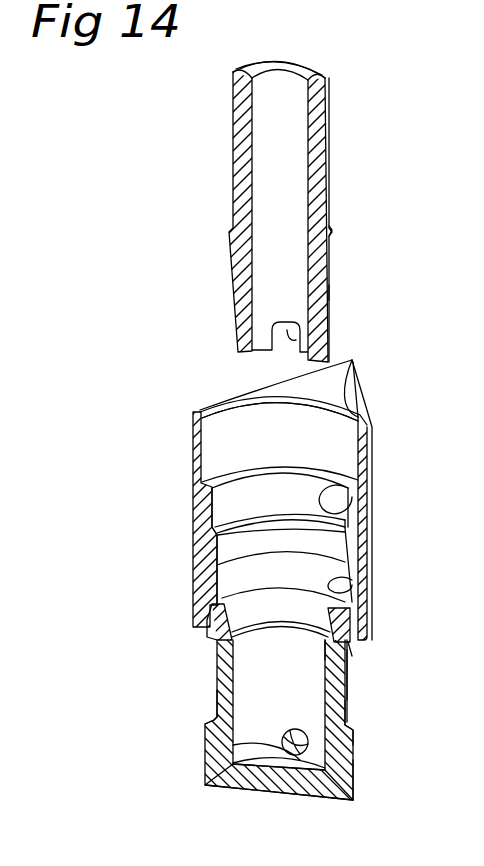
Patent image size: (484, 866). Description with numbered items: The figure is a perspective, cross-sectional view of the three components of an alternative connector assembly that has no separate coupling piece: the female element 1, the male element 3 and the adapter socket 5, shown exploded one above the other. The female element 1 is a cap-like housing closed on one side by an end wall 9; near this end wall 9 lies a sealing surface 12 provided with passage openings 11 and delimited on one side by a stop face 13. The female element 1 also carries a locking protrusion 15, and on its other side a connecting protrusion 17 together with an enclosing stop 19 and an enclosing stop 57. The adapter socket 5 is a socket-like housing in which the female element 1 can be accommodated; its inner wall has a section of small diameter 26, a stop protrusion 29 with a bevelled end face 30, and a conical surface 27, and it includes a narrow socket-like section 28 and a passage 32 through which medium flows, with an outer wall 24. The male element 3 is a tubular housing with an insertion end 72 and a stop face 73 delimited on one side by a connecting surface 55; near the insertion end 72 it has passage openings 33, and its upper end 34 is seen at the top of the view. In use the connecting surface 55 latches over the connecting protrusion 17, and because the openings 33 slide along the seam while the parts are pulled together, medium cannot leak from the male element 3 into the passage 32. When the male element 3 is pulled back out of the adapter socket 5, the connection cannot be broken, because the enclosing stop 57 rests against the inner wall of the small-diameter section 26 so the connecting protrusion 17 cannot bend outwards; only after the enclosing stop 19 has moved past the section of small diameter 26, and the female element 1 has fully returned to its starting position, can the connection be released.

The female element 1 is at (355, 812).
The male element 3 is at (344, 138).
The adapter socket 5 is at (378, 434).
The end wall 9 is at (288, 785).
The passage openings 11 is at (283, 742).
The sealing surface 12 is at (354, 770).
The stop face 13 is at (350, 724).
The locking protrusion 15 is at (216, 686).
The connecting protrusion 17 is at (320, 643).
The enclosing stop 19 is at (352, 657).
The outer wall of insert 24 is at (340, 612).
The section of small diameter 26 is at (346, 481).
The conical surface 27 is at (360, 584).
The narrow socket-like section 28 is at (240, 500).
The stop protrusion 29 is at (358, 540).
The bevelled end face 30 is at (357, 552).
The passage 32 is at (240, 435).
The passage openings 33 is at (306, 352).
The upper end of sleeve 34 is at (329, 93).
The connecting surface 55 is at (328, 230).
The enclosing stop 57 is at (350, 654).
The insertion end 72 is at (248, 364).
The stop face 73 is at (328, 294).